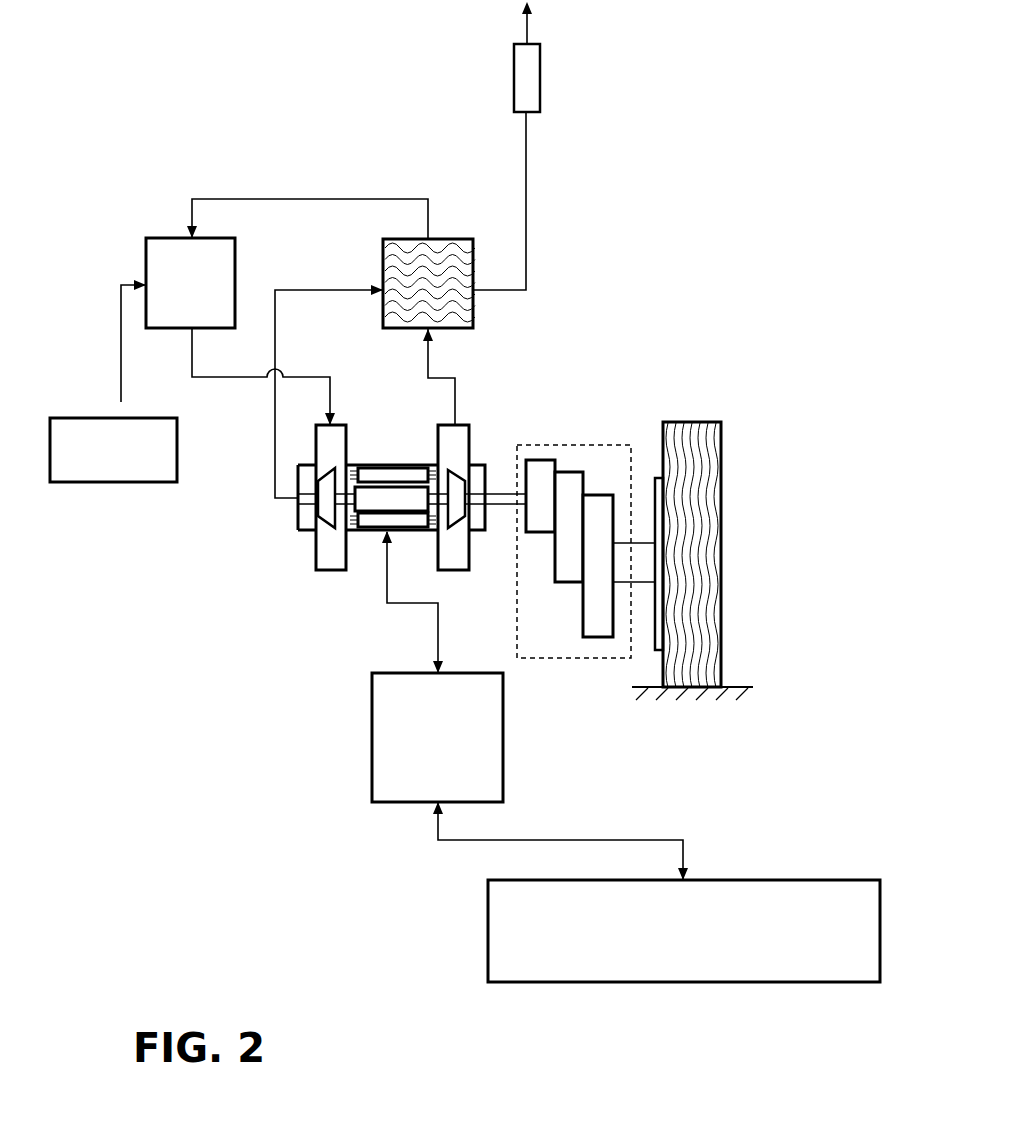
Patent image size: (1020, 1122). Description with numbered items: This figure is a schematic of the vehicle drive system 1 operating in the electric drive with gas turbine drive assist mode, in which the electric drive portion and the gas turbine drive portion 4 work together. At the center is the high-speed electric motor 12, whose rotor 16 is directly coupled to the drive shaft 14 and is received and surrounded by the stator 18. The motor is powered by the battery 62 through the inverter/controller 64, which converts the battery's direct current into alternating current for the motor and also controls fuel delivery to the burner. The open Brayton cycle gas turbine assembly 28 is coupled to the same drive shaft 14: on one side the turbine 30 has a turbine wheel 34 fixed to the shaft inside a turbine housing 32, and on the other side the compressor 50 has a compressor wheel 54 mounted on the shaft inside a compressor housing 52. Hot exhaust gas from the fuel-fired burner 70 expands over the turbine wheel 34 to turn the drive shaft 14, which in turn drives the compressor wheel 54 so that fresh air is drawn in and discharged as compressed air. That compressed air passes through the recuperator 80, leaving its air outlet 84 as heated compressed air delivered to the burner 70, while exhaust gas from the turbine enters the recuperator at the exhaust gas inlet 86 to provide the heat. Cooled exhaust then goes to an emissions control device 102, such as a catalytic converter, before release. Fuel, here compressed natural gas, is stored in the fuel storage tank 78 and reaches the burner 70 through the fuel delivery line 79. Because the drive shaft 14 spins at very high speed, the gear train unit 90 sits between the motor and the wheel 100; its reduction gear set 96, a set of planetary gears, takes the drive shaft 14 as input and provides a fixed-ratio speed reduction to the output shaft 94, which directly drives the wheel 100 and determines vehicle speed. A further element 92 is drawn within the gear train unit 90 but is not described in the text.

The vehicle drive system 1 is at (232, 59).
The gas turbine drive portion 4 is at (108, 198).
The electric motor 12 is at (382, 463).
The drive shaft 14 is at (502, 506).
The rotor 16 is at (410, 514).
The stator 18 is at (369, 522).
The open Brayton cycle gas turbine assembly 28 is at (332, 364).
The turbine 30 is at (340, 428).
The turbine housing 32 is at (313, 552).
The turbine wheel 34 is at (315, 530).
The compressor 50 is at (462, 430).
The compressor housing 52 is at (455, 572).
The compressor wheel 54 is at (453, 470).
The battery 62 is at (795, 890).
The inverter/controller 64 is at (378, 740).
The burner 70 is at (165, 238).
The fuel storage tank 78 is at (95, 472).
The fuel delivery line 79 is at (120, 330).
The recuperator 80 is at (457, 240).
The air outlet 84 is at (428, 240).
The exhaust gas inlet 86 is at (380, 287).
The gear train unit 90 is at (650, 545).
The first gear 92 is at (521, 494).
The output shaft 94 is at (640, 572).
The reduction gear set 96 is at (565, 605).
The wheel 100 is at (705, 422).
The emissions control device 102 is at (536, 78).